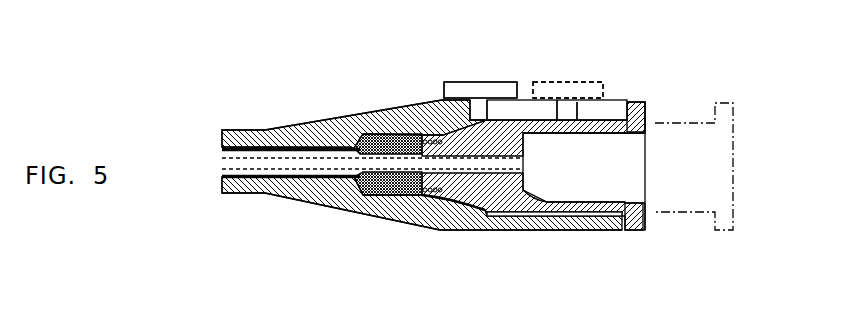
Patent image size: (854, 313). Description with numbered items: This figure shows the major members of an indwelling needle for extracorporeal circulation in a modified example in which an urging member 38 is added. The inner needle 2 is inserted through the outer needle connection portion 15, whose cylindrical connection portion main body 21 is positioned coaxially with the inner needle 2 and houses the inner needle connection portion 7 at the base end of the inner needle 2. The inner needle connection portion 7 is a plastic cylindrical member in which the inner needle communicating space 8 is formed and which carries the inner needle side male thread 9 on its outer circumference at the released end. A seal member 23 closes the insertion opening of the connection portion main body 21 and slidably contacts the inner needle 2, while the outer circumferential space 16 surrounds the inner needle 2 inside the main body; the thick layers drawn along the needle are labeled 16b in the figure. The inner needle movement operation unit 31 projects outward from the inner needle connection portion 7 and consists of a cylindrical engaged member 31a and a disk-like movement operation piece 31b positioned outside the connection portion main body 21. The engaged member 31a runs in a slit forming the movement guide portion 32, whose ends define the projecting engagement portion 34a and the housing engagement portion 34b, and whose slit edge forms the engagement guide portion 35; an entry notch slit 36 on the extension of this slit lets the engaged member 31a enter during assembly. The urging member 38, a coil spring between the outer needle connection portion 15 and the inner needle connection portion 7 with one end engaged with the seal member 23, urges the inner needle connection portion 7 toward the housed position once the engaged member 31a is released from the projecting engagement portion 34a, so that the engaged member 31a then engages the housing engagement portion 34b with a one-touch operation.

The inner needle 2 is at (310, 170).
The inner needle connection portion 7 is at (720, 157).
The inner needle communicating space 8 is at (593, 173).
The inner needle side male thread 9 is at (647, 113).
The outer needle connection portion 15 is at (519, 196).
The outer circumferential space 16 is at (282, 198).
The tension member 16b is at (277, 178).
The connection portion main body 21 is at (442, 208).
The seal member 23 is at (357, 210).
The inner needle movement operation unit 31 is at (473, 77).
The engaged member 31a is at (589, 77).
The movement operation piece 31b is at (557, 82).
The movement guide portion 32 is at (510, 105).
The projecting engagement portion 34a is at (481, 110).
The housing engagement portion 34b is at (572, 112).
The engagement guide portion 35 is at (557, 196).
The entry notch slit 36 is at (603, 132).
The urging member 38 is at (420, 197).